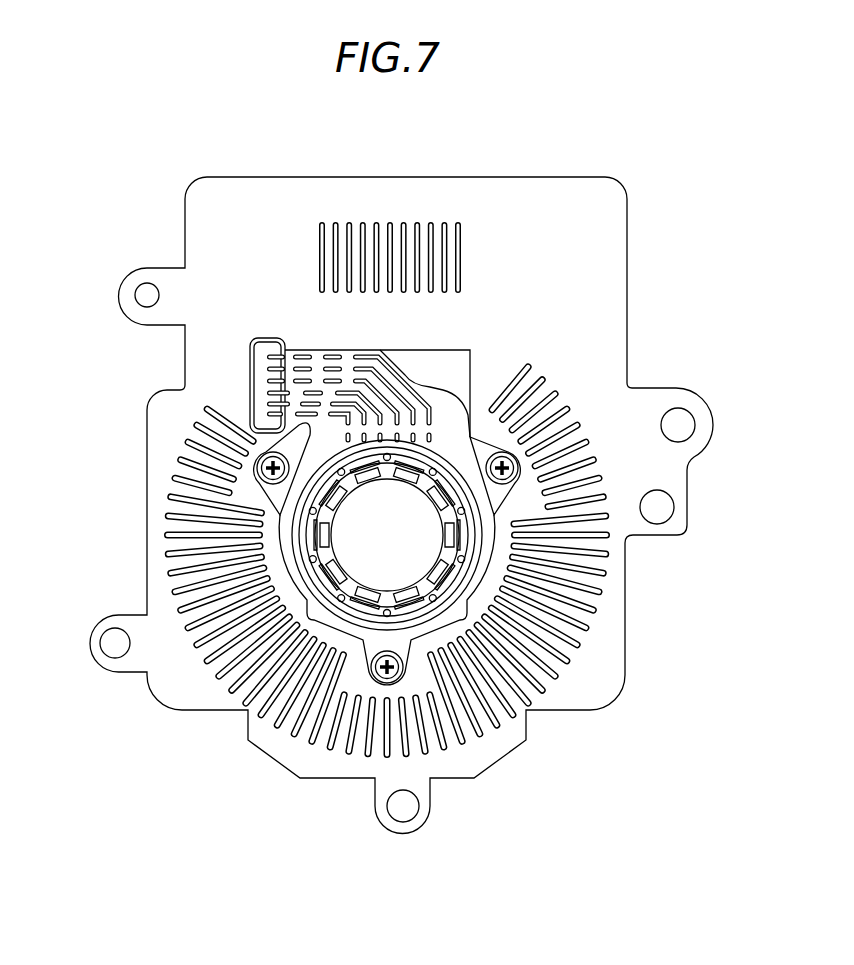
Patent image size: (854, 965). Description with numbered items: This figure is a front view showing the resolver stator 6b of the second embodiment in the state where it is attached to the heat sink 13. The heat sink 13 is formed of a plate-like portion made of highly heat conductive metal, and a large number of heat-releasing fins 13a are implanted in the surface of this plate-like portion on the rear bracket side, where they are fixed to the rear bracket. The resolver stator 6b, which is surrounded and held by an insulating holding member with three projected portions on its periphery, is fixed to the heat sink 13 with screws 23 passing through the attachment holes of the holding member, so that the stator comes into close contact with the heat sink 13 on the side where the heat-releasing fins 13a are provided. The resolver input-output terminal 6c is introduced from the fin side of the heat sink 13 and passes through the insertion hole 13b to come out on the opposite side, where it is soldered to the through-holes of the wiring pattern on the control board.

The heat sink 13 is at (613, 270).
The heat-releasing fins 13a is at (590, 603).
The insertion hole 13b is at (257, 367).
The resolver input-output terminal 6c is at (307, 357).
The resolver stator 6b is at (320, 457).
The screws 23 is at (506, 452).